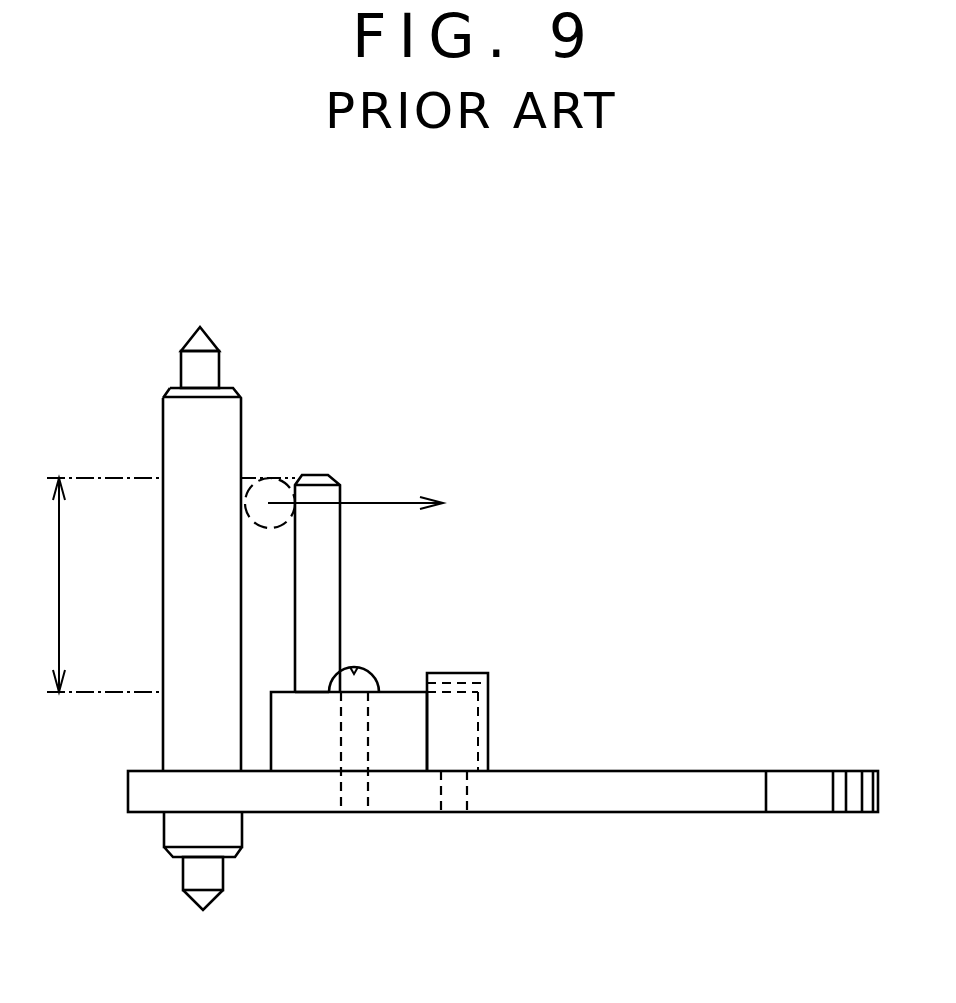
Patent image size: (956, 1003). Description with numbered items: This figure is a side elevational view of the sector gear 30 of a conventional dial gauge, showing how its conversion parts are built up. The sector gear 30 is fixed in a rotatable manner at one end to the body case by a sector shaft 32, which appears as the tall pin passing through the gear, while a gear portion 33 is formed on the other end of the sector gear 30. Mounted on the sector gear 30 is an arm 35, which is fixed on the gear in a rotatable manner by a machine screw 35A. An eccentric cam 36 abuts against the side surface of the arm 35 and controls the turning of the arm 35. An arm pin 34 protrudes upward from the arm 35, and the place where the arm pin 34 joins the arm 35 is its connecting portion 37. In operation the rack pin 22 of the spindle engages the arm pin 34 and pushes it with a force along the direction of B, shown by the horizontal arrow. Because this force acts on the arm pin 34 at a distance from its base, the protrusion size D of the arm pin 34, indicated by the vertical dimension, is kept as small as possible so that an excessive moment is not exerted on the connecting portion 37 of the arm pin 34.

The sector gear 30 is at (645, 778).
The gear portion 33 is at (808, 778).
The sector shaft 32 is at (220, 428).
The rack pin 22 is at (276, 470).
The arm pin 34 is at (322, 543).
The arm 35 is at (302, 757).
The machine screw 35A is at (368, 682).
The eccentric cam 36 is at (463, 678).
The connecting portion 37 is at (312, 690).
The direction of force B is at (372, 503).
The protrusion size D is at (96, 585).